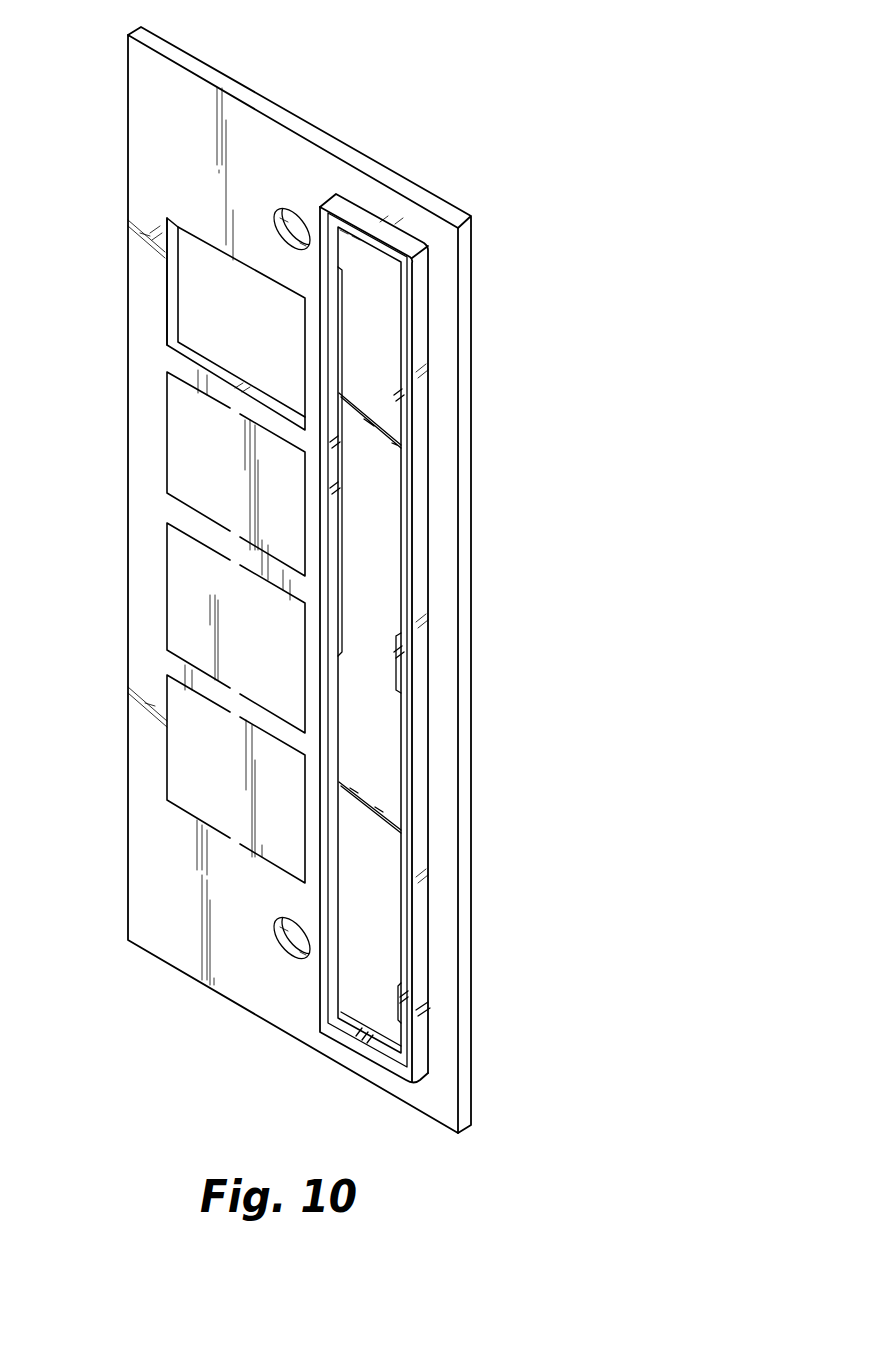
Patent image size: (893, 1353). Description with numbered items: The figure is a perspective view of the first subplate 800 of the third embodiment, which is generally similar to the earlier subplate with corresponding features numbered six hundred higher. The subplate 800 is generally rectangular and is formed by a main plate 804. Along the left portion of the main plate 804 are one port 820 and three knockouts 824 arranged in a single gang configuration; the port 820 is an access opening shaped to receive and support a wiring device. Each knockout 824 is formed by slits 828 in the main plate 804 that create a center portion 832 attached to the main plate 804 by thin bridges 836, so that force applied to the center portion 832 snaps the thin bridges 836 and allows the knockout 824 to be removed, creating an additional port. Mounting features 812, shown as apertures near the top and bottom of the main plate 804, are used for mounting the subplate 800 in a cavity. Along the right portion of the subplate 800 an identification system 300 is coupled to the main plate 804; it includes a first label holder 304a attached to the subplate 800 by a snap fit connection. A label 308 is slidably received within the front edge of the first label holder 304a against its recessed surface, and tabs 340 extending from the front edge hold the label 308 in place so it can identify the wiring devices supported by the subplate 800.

The first subplate 800 is at (466, 120).
The main plate 804 is at (200, 93).
The mounting features 812 is at (292, 210).
The port 820 is at (188, 292).
The knockouts 824 is at (190, 456).
The center portion 832 is at (233, 468).
The slits 828 is at (189, 818).
The thin bridges 836 is at (232, 850).
The identification system 300 is at (445, 678).
The first label holder 304a is at (420, 507).
The label 308 is at (378, 770).
The tabs 340 is at (403, 998).